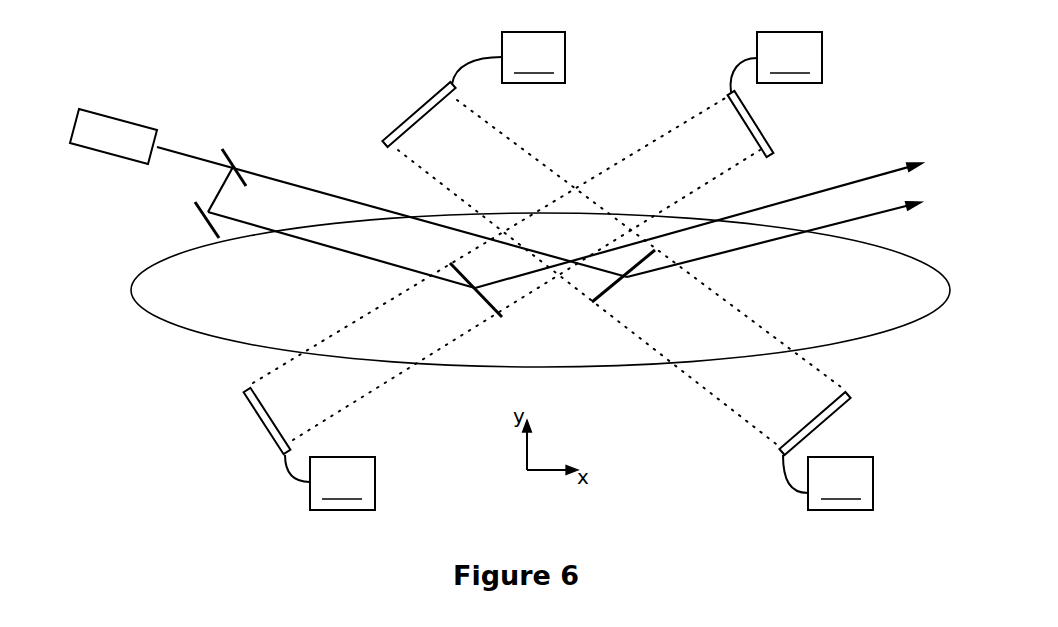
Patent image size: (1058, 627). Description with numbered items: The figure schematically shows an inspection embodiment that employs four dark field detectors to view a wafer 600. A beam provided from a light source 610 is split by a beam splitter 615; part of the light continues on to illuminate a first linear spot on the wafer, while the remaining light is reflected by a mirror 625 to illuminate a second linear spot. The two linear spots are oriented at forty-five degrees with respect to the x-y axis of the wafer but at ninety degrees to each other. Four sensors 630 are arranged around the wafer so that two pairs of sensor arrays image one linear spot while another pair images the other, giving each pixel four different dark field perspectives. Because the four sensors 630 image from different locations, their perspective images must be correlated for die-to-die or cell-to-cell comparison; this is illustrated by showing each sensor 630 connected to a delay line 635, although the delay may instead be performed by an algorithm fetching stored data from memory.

The wafer 600 is at (263, 318).
The light source 610 is at (92, 122).
The beam splitter 615 is at (234, 160).
The mirror 625 is at (203, 216).
The sensor 630 is at (424, 92).
The delay line 635 is at (579, 271).